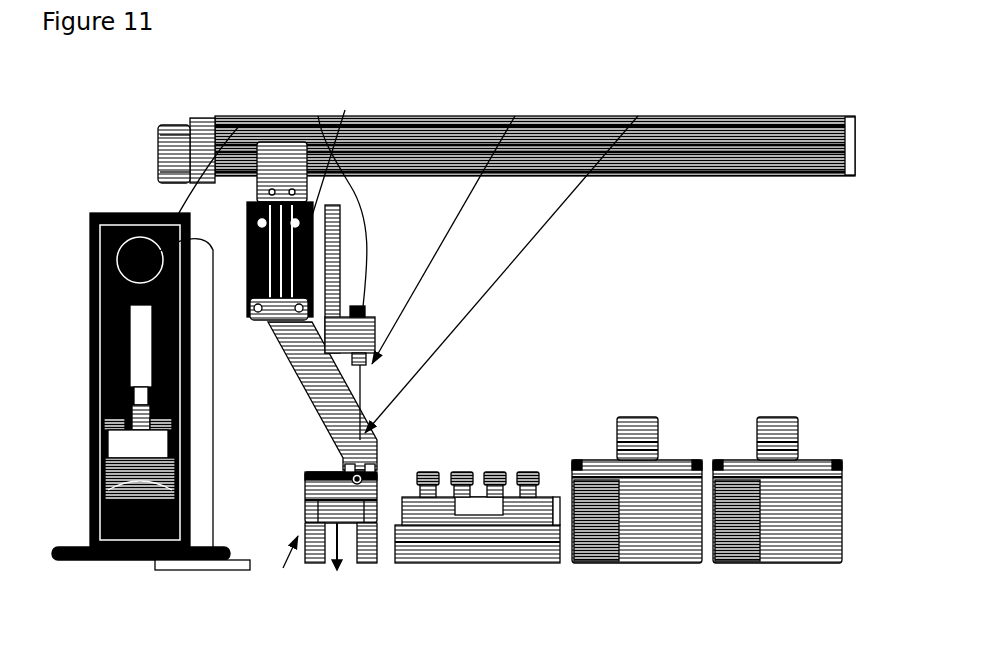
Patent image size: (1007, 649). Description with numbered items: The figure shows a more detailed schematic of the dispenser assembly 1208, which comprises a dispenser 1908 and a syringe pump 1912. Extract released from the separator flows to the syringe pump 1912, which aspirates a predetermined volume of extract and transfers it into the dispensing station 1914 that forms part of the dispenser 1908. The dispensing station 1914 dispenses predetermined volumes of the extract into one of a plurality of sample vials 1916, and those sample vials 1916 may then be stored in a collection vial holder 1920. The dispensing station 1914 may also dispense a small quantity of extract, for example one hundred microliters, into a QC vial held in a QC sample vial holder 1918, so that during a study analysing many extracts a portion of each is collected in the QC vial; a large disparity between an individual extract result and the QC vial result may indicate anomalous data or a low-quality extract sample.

The dispenser assembly 1208 is at (727, 270).
The dispenser 1908 is at (463, 281).
The syringe pump 1912 is at (120, 209).
The dispensing station 1914 is at (340, 485).
The sample vials 1916 is at (470, 547).
The QC sample vial holder 1918 is at (638, 547).
The collection vial holder 1920 is at (778, 547).